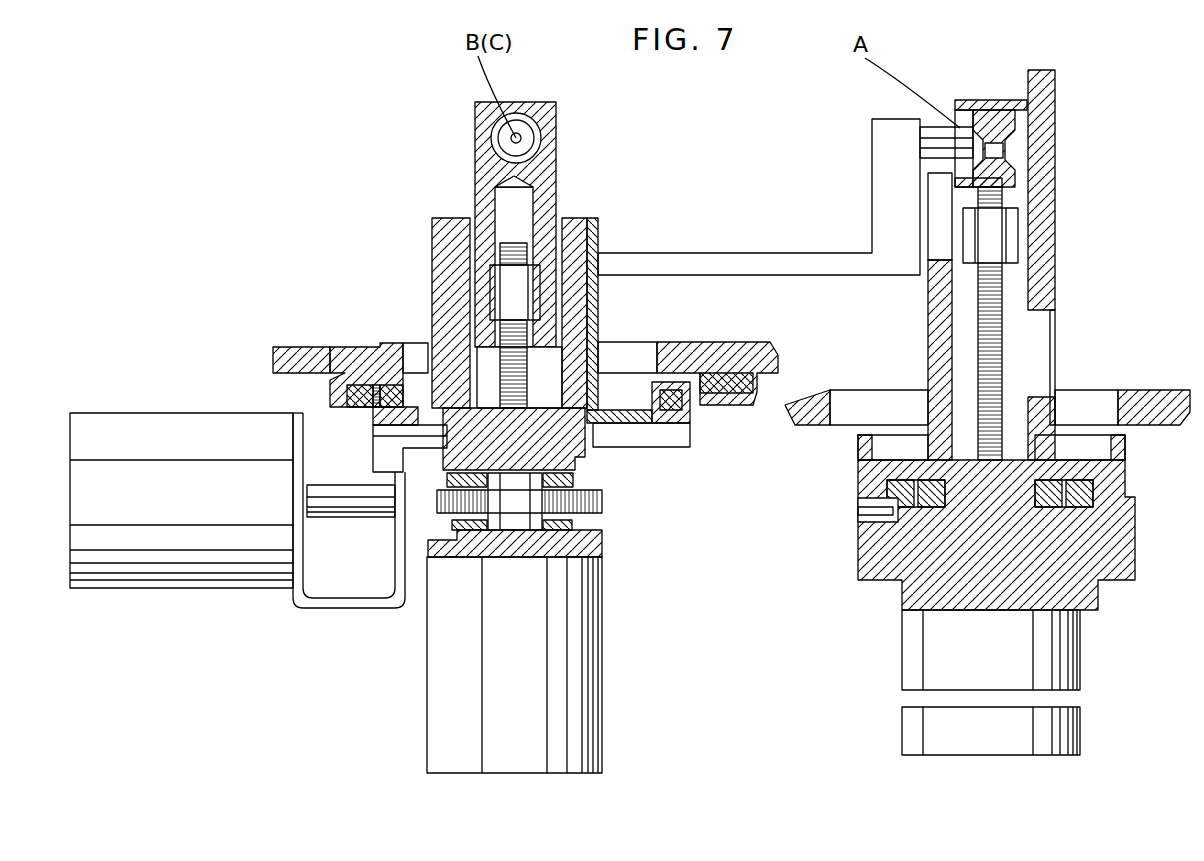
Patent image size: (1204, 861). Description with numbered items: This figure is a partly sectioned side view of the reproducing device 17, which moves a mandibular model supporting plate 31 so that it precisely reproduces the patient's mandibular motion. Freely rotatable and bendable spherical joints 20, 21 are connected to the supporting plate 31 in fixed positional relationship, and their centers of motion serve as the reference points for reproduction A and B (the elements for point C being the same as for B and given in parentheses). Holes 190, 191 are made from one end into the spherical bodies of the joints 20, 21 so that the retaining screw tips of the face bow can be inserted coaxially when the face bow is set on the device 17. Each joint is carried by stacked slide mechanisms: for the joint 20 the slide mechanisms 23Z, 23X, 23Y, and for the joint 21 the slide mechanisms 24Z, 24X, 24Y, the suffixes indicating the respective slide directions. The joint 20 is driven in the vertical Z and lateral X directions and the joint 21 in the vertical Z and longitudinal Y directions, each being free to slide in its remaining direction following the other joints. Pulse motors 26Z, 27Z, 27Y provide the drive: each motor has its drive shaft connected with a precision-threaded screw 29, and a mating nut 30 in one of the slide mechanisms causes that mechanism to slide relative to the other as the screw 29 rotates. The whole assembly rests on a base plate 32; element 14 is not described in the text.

The flange 14 is at (612, 420).
The reproducing device 17 is at (680, 167).
The spherical joint 20 is at (975, 120).
The spherical joint 21 is at (508, 138).
The slide mechanism 23X is at (1080, 450).
The slide mechanism 23Y is at (885, 435).
The slide mechanism 23Z is at (1028, 290).
The slide mechanism 24X is at (372, 400).
The slide mechanism 24Y is at (605, 440).
The slide mechanism 24Z is at (455, 255).
The pulse motor 26Z is at (1080, 653).
The pulse motor 27Y is at (140, 425).
The pulse motor 27Z is at (593, 713).
The precision-threaded screw 29 is at (528, 375).
The nut 30 is at (535, 295).
The mandibular model supporting plate 31 is at (822, 253).
The base plate 32 is at (717, 347).
The hole 190 is at (990, 100).
The hole 191 is at (492, 160).